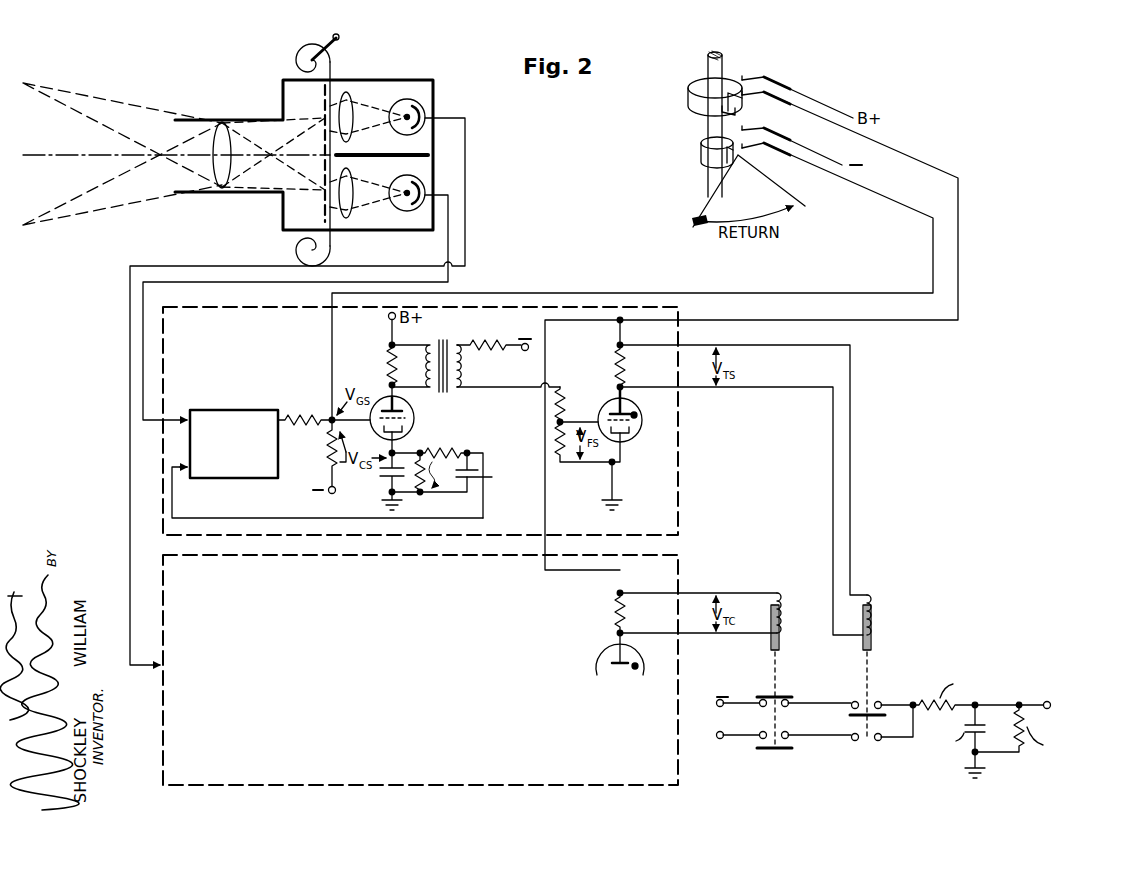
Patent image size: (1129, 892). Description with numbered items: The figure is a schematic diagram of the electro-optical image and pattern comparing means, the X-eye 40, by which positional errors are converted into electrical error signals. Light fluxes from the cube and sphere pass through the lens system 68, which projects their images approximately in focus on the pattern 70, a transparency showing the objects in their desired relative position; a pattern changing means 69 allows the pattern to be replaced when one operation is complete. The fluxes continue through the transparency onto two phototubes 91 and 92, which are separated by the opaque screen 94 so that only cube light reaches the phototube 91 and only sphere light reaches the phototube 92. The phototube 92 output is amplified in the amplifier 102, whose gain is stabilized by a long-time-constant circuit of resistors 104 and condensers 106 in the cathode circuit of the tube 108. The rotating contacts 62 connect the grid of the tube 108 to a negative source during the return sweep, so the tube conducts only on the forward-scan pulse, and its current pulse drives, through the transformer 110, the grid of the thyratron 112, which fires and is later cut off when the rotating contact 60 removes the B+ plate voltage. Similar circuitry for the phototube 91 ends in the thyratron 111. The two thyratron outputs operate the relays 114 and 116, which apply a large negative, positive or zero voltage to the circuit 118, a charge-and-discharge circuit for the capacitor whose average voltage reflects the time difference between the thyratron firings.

The X-eye 40 is at (254, 80).
The lens system 68 is at (223, 140).
The pattern changing means 69 is at (296, 58).
The pattern 70 is at (330, 93).
The phototube 91 is at (412, 99).
The phototube 92 is at (428, 213).
The opaque screen 94 is at (436, 152).
The rotating contact 60 is at (688, 97).
The rotating contacts 62 is at (695, 155).
The amplifier 102 is at (217, 410).
The resistors 104 is at (447, 452).
The condensers 106 is at (460, 479).
The tube 108 is at (414, 419).
The transformer 110 is at (456, 340).
The thyratron 111 is at (606, 652).
The thyratron 112 is at (632, 440).
The relay 114 is at (767, 693).
The relay 116 is at (864, 693).
The circuit 118 is at (1008, 690).